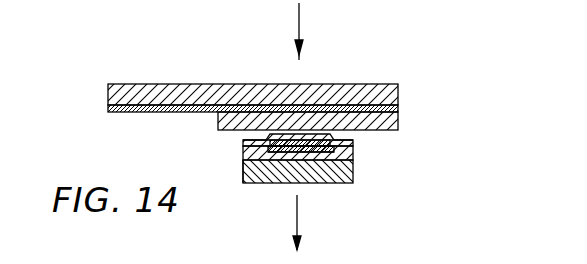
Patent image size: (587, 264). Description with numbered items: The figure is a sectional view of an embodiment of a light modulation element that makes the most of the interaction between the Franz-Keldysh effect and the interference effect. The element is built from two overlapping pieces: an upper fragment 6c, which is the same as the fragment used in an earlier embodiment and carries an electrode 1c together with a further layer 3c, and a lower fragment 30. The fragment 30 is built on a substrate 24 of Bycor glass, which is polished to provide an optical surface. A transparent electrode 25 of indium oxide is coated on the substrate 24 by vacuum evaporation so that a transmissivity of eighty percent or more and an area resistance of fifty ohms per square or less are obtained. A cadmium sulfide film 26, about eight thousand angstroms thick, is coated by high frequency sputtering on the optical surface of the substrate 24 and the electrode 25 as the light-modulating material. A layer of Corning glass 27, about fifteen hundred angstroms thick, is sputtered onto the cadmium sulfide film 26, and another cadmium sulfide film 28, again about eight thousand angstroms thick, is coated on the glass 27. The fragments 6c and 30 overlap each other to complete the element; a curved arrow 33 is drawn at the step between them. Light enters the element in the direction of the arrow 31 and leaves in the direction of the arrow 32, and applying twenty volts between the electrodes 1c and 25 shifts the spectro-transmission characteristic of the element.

The electrode 1c is at (283, 109).
The lower board layer 3c is at (391, 130).
The fragment 6c is at (390, 77).
The substrate 24 is at (352, 182).
The transparent electrode 25 is at (287, 152).
The cadmium sulfide film 26 is at (353, 160).
The glass 27 is at (243, 142).
The cadmium sulfide film 28 is at (353, 140).
The fragment 30 is at (243, 183).
The arrow 31 is at (300, 28).
The arrow 32 is at (296, 220).
The flow direction arrow 33 is at (229, 137).